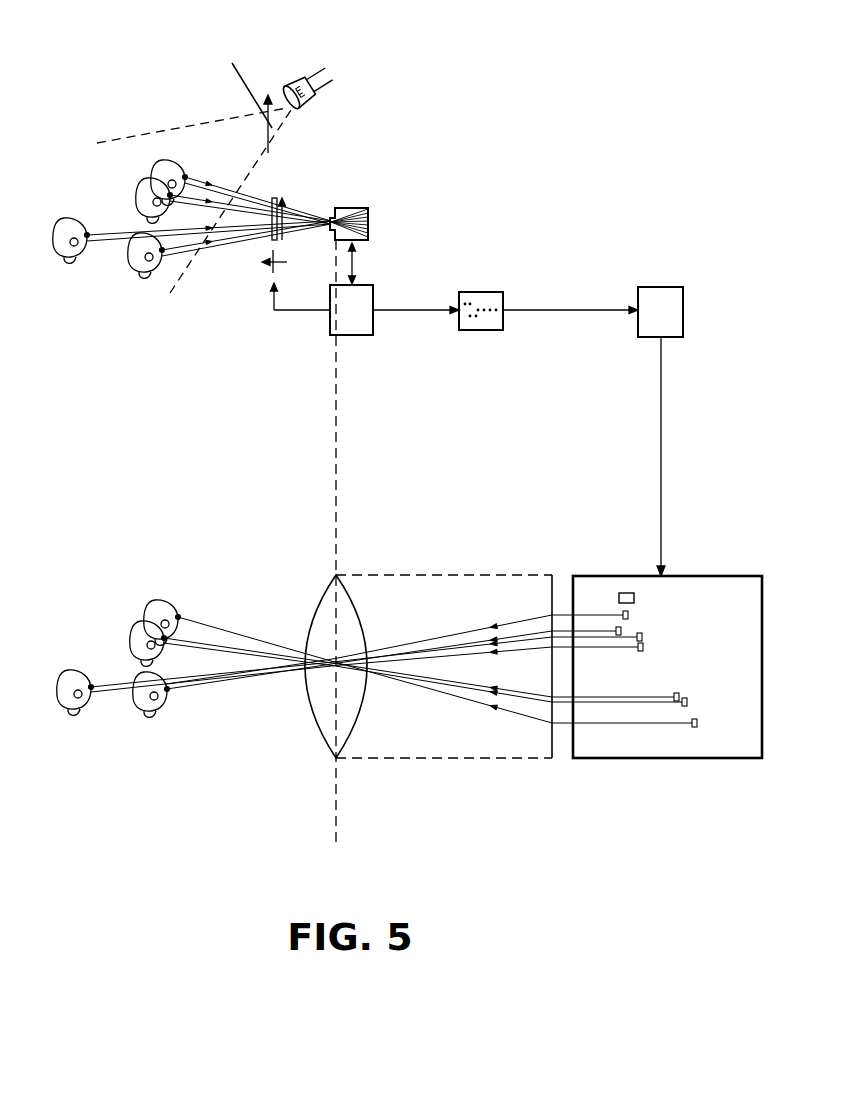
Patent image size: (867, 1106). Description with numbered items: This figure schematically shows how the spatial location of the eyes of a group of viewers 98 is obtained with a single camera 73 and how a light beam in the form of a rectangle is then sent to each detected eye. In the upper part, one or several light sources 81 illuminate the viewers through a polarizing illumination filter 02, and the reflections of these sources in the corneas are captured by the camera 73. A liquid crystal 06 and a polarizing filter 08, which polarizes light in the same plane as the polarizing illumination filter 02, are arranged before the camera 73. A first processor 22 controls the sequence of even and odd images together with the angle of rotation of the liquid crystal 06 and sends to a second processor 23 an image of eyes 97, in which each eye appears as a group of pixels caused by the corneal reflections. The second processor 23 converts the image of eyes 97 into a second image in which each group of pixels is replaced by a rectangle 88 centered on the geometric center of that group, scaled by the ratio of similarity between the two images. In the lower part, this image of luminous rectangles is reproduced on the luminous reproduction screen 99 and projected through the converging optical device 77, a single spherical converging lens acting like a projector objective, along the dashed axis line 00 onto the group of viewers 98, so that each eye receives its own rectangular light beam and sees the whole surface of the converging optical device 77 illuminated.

The polarizing illumination filter 02 is at (244, 82).
The light source 81 is at (326, 71).
The group of viewers 98 is at (147, 175).
The polarizing filter 08 is at (284, 216).
The camera 73 is at (368, 228).
The liquid crystal 06 is at (275, 225).
The first processor 22 is at (330, 324).
The image of eyes 97 is at (483, 326).
The second processor 23 is at (663, 287).
The rectangle 88 is at (625, 592).
The converging optical device 77 is at (345, 713).
The luminous reproduction screen 99 is at (667, 659).
The optical axis 00 is at (336, 555).